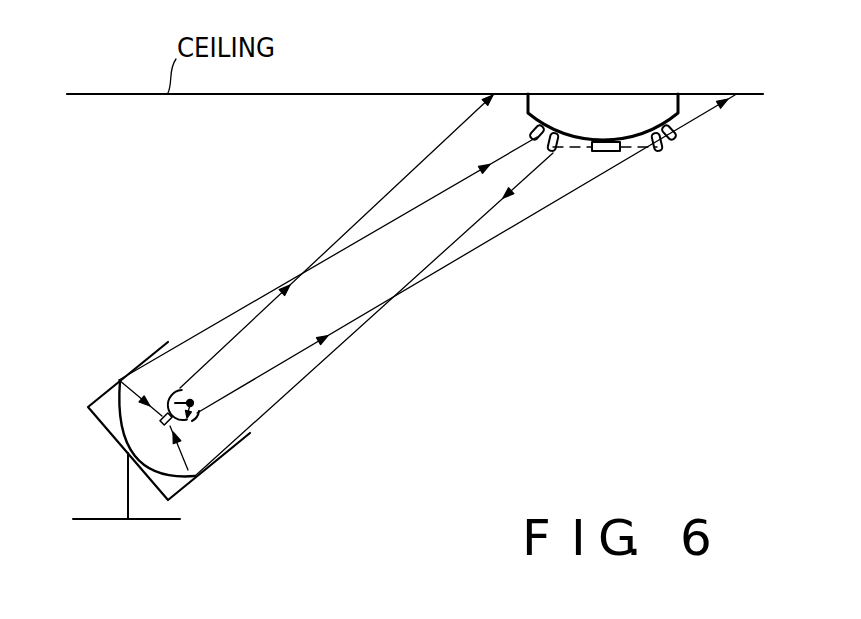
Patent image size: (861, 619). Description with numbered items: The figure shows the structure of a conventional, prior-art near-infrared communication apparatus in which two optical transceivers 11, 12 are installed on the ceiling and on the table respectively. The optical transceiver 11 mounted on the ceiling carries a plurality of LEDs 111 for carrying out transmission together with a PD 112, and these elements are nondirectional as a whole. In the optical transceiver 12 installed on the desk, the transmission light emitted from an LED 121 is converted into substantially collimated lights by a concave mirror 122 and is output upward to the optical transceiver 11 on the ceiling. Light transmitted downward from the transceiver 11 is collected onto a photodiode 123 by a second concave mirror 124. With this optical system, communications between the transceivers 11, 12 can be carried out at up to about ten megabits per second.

The optical transceiver 11 is at (600, 92).
The LEDs 111 is at (530, 131).
The PD 112 is at (607, 152).
The optical transceiver 12 is at (128, 490).
The LED 121 is at (185, 396).
The concave mirror 122 is at (199, 417).
The photodiode 123 is at (160, 421).
The concave mirror 124 is at (182, 480).